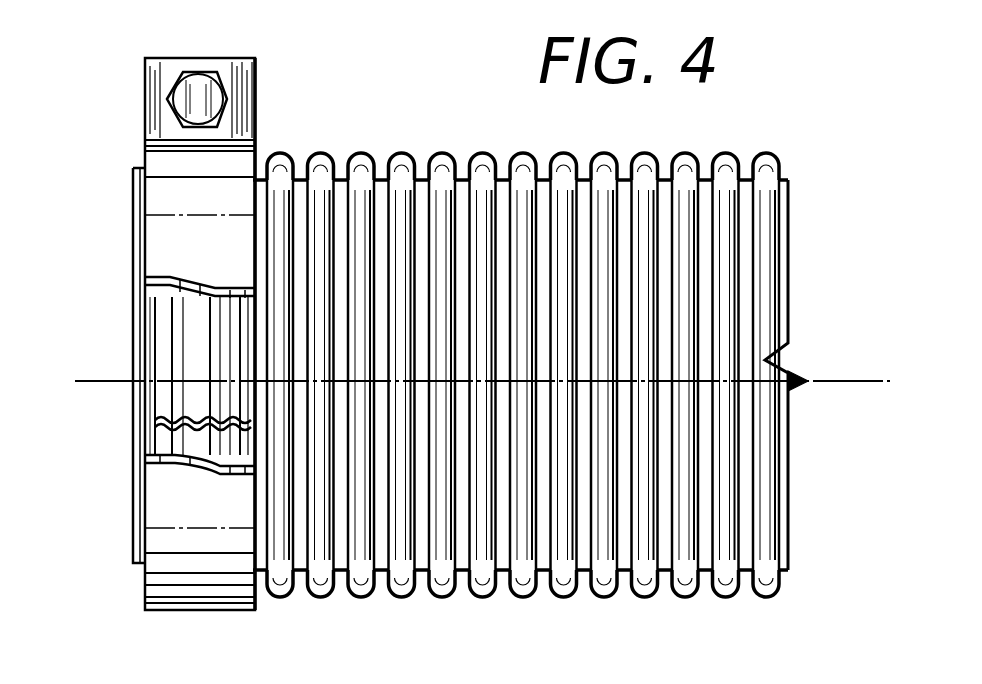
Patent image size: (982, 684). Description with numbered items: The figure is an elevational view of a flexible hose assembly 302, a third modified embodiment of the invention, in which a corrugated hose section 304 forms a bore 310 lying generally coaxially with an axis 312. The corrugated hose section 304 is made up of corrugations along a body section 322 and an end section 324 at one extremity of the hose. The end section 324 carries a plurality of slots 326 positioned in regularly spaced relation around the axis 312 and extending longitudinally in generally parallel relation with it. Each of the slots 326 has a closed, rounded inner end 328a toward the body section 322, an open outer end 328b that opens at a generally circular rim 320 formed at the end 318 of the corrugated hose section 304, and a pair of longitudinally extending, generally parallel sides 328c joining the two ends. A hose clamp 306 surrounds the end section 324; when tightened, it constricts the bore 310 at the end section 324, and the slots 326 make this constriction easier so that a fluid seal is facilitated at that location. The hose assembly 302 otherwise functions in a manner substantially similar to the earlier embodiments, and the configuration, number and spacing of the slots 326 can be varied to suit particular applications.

The flexible hose assembly 302 is at (756, 138).
The corrugated hose section 304 is at (770, 154).
The hose clamp 306 is at (257, 60).
The bore 310 is at (790, 259).
The axis 312 is at (848, 382).
The end 318 is at (138, 200).
The rim 320 is at (143, 228).
The body section 322 is at (400, 150).
The end section 324 is at (131, 168).
The slots 326 is at (197, 420).
The inner end 328a is at (234, 470).
The outer end 328b is at (150, 428).
The sides 328c is at (211, 380).